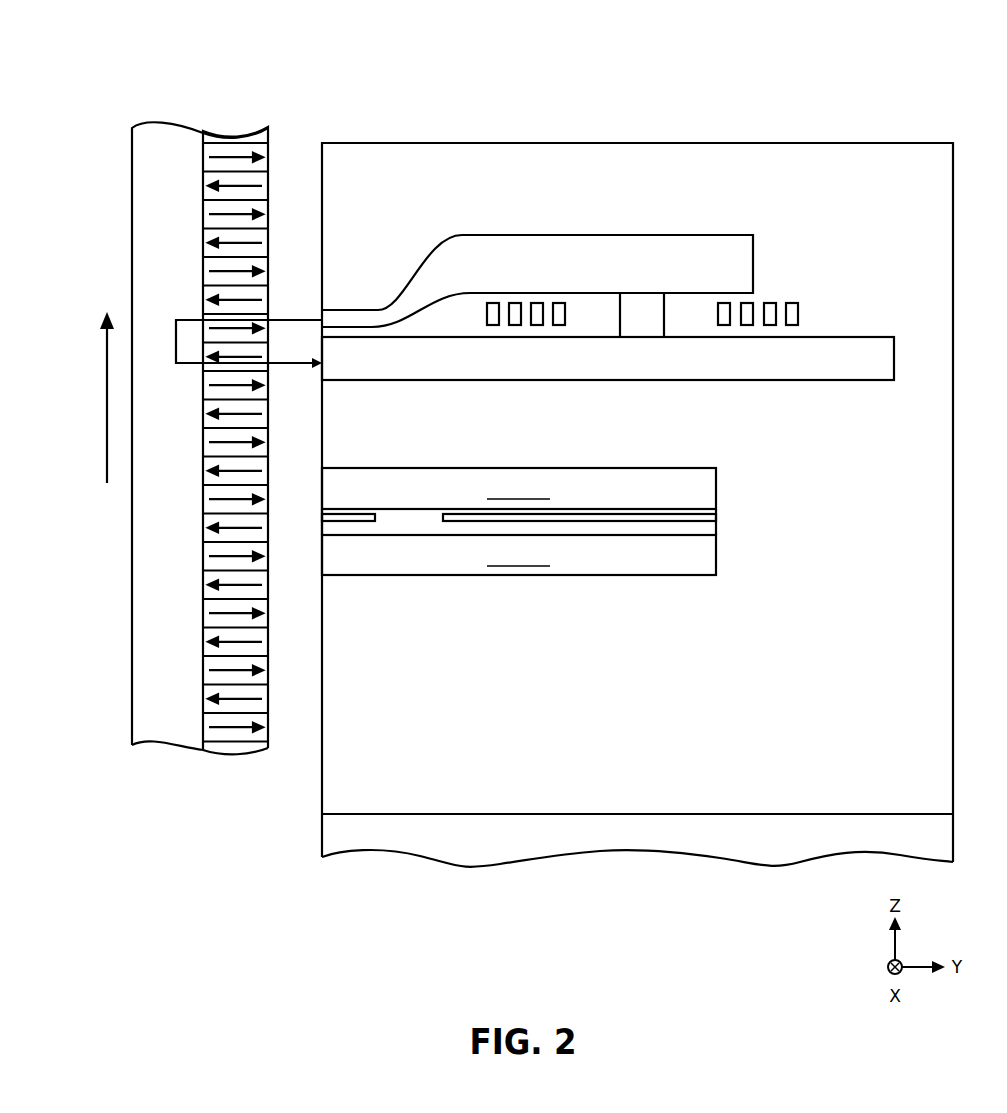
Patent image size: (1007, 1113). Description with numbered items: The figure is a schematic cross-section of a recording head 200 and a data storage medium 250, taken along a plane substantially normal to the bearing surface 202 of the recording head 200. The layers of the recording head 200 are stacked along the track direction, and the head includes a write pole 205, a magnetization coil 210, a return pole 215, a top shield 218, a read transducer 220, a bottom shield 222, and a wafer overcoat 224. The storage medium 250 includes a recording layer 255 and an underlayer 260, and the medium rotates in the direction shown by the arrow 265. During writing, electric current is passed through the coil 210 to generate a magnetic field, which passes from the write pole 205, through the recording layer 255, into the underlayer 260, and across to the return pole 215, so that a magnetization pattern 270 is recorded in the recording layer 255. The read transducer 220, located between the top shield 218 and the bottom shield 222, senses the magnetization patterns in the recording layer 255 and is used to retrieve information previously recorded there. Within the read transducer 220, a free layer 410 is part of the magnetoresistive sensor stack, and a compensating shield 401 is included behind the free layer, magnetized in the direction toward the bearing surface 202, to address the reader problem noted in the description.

The recording head 200 is at (783, 100).
The bearing surface 202 is at (320, 783).
The write pole 205 is at (374, 310).
The magnetization coil 210 is at (537, 303).
The return pole 215 is at (541, 355).
The top shield 218 is at (618, 490).
The read transducer 220 is at (716, 527).
The bottom shield 222 is at (640, 555).
The wafer overcoat 224 is at (846, 437).
The data storage medium 250 is at (177, 762).
The recording layer 255 is at (227, 138).
The underlayer 260 is at (150, 717).
The arrow 265 is at (107, 401).
The magnetization pattern 270 is at (245, 152).
The compensating shield 401 is at (687, 517).
The free layer 410 is at (351, 520).